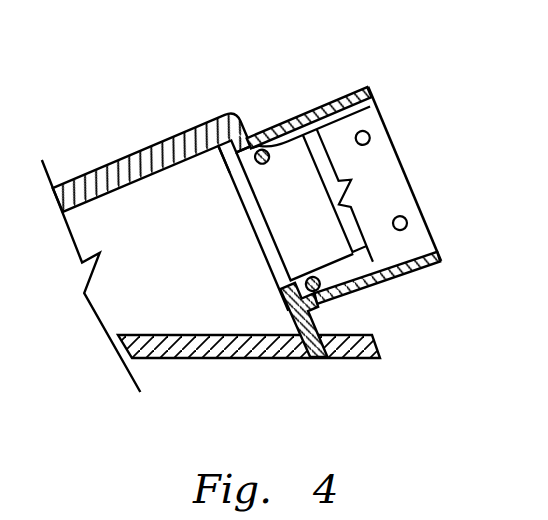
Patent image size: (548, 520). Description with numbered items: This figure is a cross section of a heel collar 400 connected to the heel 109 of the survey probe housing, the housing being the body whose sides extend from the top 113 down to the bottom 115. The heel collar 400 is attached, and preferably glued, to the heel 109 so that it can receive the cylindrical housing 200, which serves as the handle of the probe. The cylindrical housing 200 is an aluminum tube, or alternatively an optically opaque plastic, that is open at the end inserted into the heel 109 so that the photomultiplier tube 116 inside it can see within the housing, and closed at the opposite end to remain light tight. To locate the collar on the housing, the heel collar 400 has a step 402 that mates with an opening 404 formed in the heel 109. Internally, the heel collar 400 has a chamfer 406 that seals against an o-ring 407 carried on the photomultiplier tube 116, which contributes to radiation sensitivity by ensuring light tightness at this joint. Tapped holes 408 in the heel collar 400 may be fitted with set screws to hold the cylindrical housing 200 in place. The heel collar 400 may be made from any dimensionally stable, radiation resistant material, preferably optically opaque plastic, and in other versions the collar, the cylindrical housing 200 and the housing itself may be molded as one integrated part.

The top 113 is at (147, 150).
The heel 109 is at (252, 112).
The heel collar 400 is at (368, 82).
The chamfer 406 is at (370, 106).
The tapped holes 408 is at (408, 223).
The photomultiplier tube 116 is at (258, 236).
The opening 404 is at (217, 169).
The bottom 115 is at (188, 360).
The step 402 is at (297, 316).
The o-ring 407 is at (320, 285).
The cylindrical housing 200 is at (383, 278).